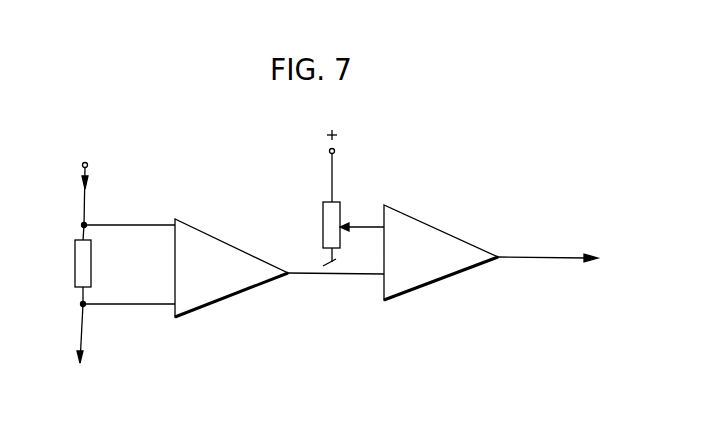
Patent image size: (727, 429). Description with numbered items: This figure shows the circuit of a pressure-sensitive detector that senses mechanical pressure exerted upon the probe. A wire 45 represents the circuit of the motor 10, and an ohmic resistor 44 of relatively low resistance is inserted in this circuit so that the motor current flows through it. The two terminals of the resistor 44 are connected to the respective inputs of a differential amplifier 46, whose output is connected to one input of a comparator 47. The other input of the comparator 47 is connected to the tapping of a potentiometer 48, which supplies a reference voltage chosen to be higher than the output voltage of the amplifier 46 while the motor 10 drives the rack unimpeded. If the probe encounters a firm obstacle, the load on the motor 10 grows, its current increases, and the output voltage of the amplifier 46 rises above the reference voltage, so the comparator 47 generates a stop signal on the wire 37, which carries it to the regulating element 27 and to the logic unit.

The wire 45 is at (84, 198).
The ohmic resistor 44 is at (75, 262).
The motor 10 is at (121, 347).
The differential amplifier 46 is at (210, 247).
The potentiometer 48 is at (323, 210).
The comparator 47 is at (437, 272).
The wire 37 is at (533, 260).
The regulating element 27 is at (605, 261).